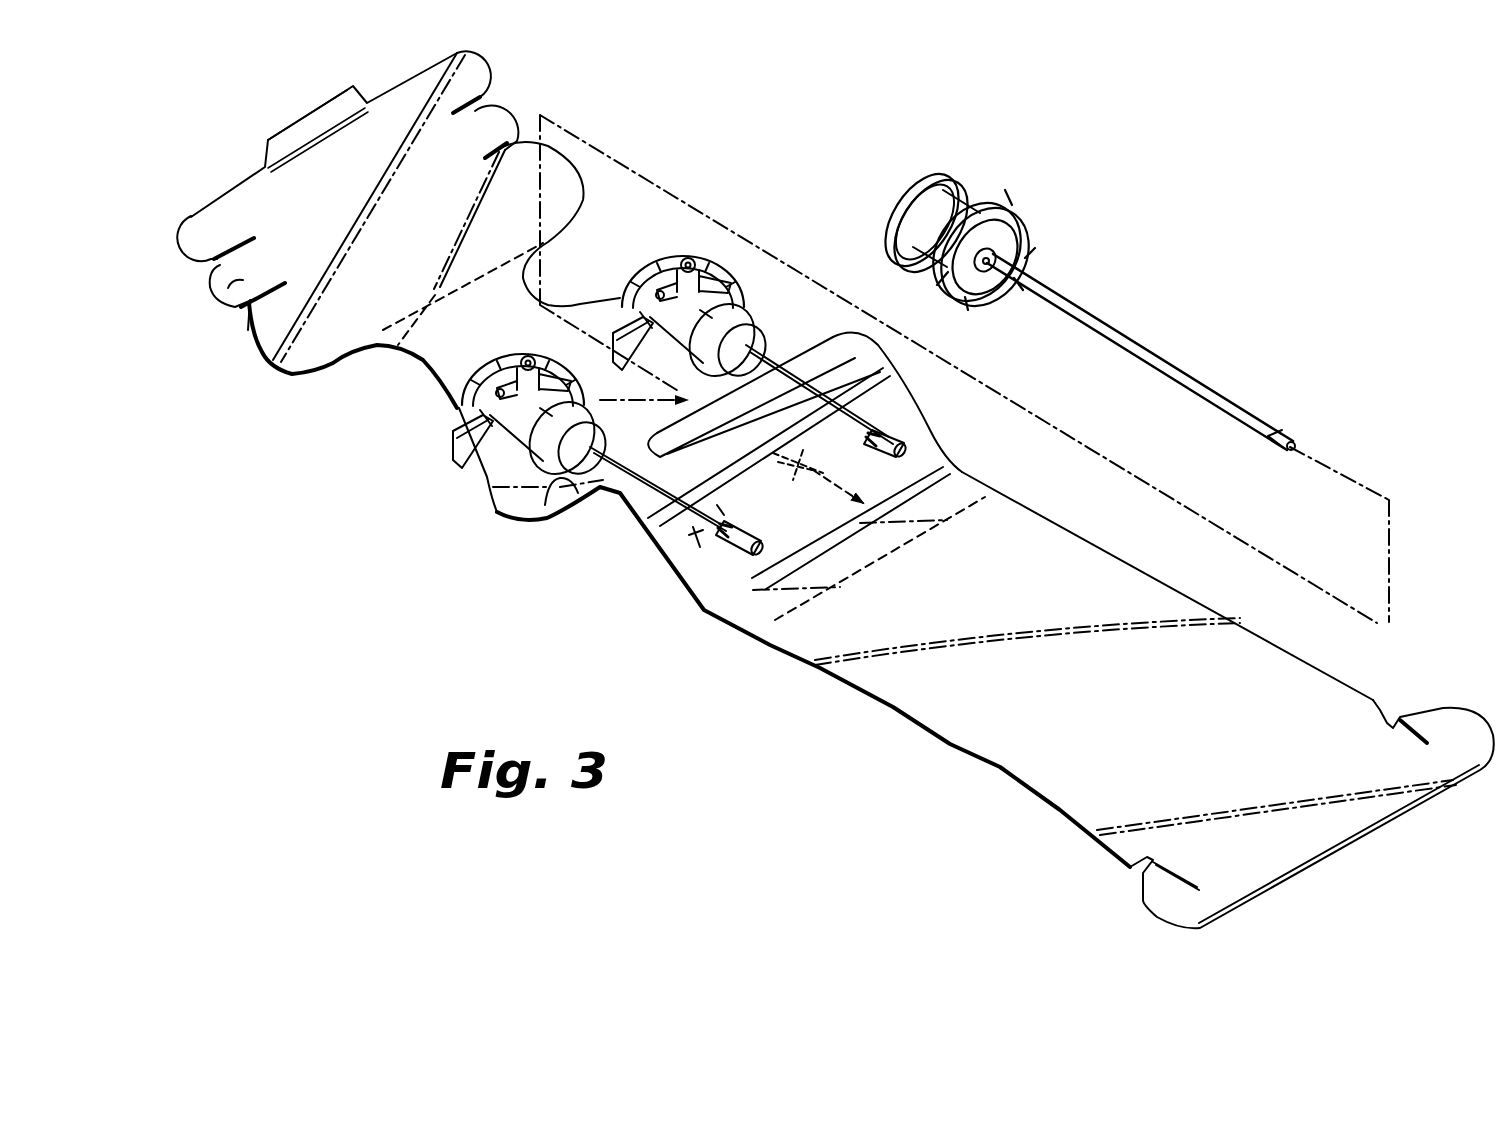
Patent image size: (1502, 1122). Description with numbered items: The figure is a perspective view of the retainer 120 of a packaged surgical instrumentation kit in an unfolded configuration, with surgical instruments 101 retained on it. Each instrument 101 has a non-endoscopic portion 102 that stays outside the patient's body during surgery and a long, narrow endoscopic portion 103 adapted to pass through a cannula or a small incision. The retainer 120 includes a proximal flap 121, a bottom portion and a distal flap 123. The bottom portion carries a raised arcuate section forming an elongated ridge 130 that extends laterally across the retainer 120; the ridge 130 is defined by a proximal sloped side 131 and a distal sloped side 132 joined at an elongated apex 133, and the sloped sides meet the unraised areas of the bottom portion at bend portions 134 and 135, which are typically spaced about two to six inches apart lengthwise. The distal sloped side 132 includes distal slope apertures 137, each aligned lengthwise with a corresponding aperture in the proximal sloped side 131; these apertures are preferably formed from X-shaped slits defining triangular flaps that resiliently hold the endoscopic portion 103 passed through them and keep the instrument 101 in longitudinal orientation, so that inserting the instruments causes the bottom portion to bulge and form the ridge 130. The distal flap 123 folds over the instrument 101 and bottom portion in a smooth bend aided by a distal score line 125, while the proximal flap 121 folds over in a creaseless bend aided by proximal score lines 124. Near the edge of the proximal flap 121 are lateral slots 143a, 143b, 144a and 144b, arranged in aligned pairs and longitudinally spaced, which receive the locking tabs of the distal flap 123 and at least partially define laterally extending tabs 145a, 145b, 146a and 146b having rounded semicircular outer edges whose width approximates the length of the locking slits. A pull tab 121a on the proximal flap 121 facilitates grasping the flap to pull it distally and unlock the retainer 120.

The surgical instrument 101 is at (450, 472).
The non-endoscopic portion 102 is at (503, 357).
The endoscopic portion 103 is at (763, 357).
The retainer 120 is at (906, 751).
The proximal flap 121 is at (273, 394).
The pull tab 121a is at (293, 124).
The distal flap 123 is at (1128, 704).
The proximal score line 124 is at (383, 325).
The distal score line 125 is at (1030, 515).
The ridge 130 is at (593, 542).
The proximal sloped side 131 is at (547, 523).
The distal sloped side 132 is at (893, 393).
The apex 133 is at (843, 333).
The bend portion 134 is at (500, 518).
The bend portion 135 is at (964, 465).
The distal slope aperture 137 is at (895, 413).
The lateral slot 143a is at (253, 238).
The lateral slot 143b is at (486, 156).
The lateral slot 144a is at (283, 286).
The lateral slot 144b is at (492, 162).
The lateral tab 145a is at (207, 233).
The lateral tab 145b is at (487, 68).
The lateral tab 146a is at (213, 303).
The lateral tab 146b is at (526, 106).